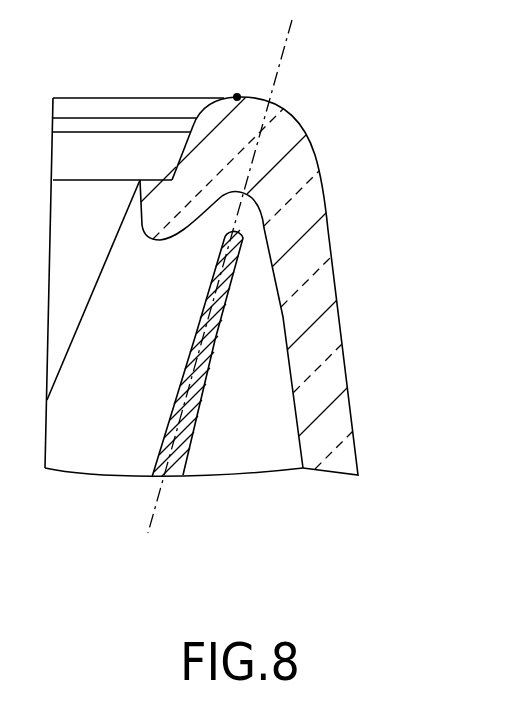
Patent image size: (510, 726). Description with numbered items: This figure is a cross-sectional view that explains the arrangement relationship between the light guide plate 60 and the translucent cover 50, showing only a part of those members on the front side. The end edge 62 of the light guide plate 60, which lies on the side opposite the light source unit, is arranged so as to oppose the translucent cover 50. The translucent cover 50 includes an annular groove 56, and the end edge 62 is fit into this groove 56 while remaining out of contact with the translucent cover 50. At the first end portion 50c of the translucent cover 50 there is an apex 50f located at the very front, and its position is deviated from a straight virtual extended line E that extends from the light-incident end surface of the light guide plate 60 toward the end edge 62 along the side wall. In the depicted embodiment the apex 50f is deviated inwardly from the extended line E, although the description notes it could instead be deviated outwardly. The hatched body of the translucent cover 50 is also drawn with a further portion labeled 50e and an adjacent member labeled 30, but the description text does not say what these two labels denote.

The block 30 is at (88, 110).
The translucent cover 50 is at (340, 261).
The first end portion 50c is at (281, 111).
The arm of hook 50e is at (340, 385).
The apex 50f is at (237, 93).
The groove 56 is at (248, 212).
The light guide plate 60 is at (205, 441).
The end edge 62 is at (223, 218).
The extended line E is at (288, 37).